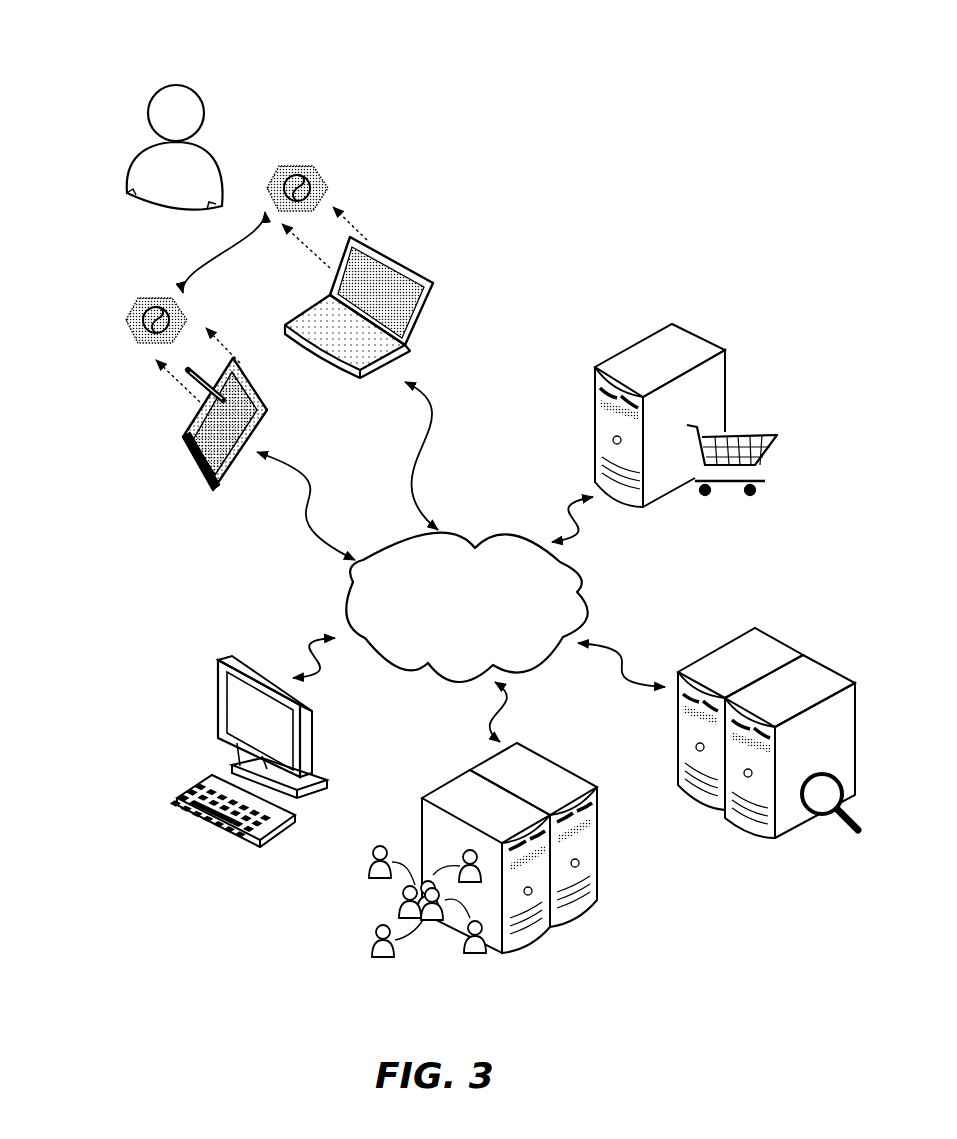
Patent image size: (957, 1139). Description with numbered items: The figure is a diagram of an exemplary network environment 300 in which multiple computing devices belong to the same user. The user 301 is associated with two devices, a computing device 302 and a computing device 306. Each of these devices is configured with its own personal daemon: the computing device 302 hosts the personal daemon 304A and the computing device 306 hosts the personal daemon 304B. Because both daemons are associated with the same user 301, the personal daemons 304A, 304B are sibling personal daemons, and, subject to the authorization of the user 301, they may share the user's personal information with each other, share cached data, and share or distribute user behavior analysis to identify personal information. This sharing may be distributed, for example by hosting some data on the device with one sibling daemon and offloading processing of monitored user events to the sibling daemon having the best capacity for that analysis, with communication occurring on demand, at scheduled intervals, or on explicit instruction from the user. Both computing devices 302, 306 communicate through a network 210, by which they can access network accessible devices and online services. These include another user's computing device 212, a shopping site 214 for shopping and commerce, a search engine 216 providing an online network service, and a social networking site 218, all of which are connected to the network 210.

The network environment 300 is at (607, 105).
The user 301 is at (139, 139).
The computing device 302 is at (181, 436).
The personal daemon 304A is at (150, 292).
The personal daemon 304B is at (306, 165).
The computing device 306 is at (427, 307).
The network 210 is at (466, 607).
The computing device 212 is at (230, 660).
The shopping site 214 is at (690, 333).
The search engine 216 is at (793, 656).
The social networking site 218 is at (573, 928).